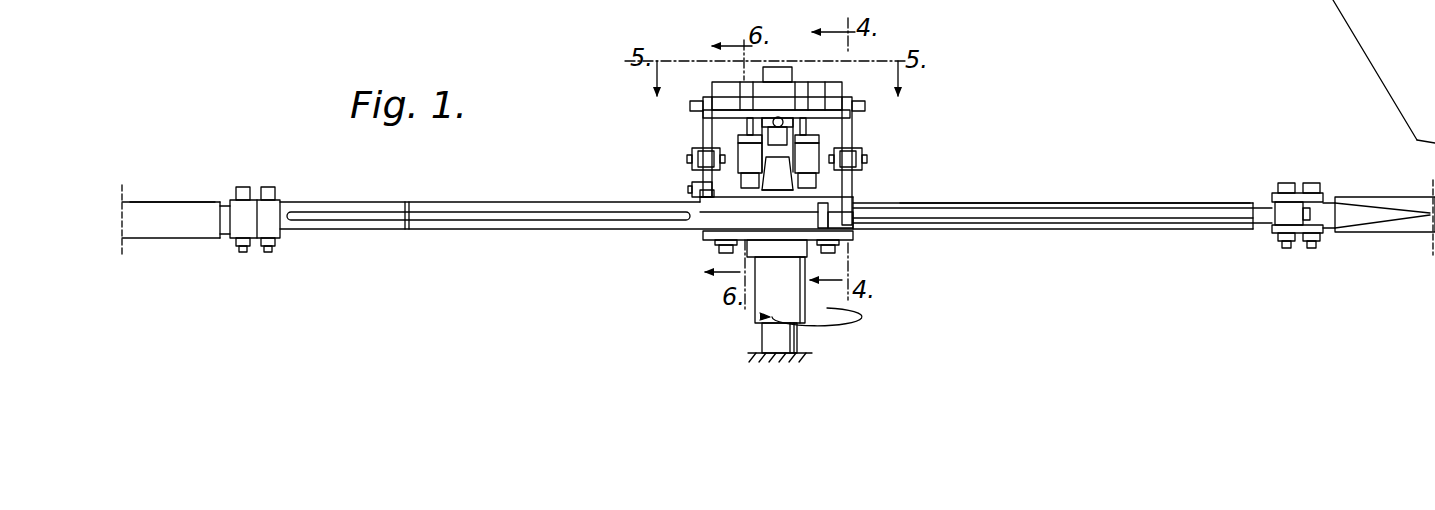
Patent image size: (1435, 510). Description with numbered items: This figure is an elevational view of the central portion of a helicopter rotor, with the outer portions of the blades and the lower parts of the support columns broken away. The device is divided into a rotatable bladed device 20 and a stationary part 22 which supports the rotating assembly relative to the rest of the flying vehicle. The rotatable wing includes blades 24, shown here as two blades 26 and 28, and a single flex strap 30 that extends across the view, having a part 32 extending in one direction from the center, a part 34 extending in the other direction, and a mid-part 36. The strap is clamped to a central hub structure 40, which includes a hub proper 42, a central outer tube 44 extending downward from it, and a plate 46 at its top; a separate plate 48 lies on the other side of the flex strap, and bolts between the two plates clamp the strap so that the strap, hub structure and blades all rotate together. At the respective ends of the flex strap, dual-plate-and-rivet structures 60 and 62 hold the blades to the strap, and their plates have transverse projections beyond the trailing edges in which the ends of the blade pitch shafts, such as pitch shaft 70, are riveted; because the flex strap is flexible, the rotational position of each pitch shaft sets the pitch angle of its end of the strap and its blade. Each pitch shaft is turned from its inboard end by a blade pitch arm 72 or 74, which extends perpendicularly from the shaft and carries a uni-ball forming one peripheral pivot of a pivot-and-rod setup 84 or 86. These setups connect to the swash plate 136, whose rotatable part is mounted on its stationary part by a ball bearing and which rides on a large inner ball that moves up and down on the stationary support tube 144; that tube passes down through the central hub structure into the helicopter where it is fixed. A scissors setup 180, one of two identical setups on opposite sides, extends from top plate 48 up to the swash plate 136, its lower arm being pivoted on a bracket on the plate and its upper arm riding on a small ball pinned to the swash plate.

The rotatable bladed device 20 is at (1043, 203).
The stationary part 22 is at (798, 341).
The blades 24 is at (192, 240).
The blade 26 is at (172, 205).
The blade 28 is at (1392, 233).
The flex strap 30 is at (527, 230).
The flex strap part 32 is at (1122, 230).
The flex strap part 34 is at (468, 203).
The mid-part 36 is at (722, 215).
The central hub structure 40 is at (808, 254).
The hub proper 42 is at (805, 258).
The central outer tube 44 is at (762, 322).
The plate 46 is at (850, 236).
The separate plate 48 is at (703, 200).
The dual-plate-and-rivet structure 60 is at (286, 198).
The dual-plate-and-rivet structure 62 is at (1272, 196).
The blade pitch shaft 70 is at (1023, 218).
The blade pitch arm 72 is at (700, 183).
The blade pitch arm 74 is at (853, 205).
The pivot-and-rod setup 84 is at (693, 148).
The pivot-and-rod setup 86 is at (863, 158).
The swash plate 136 is at (802, 82).
The stationary support tube 144 is at (786, 68).
The scissors setup 180 is at (778, 173).